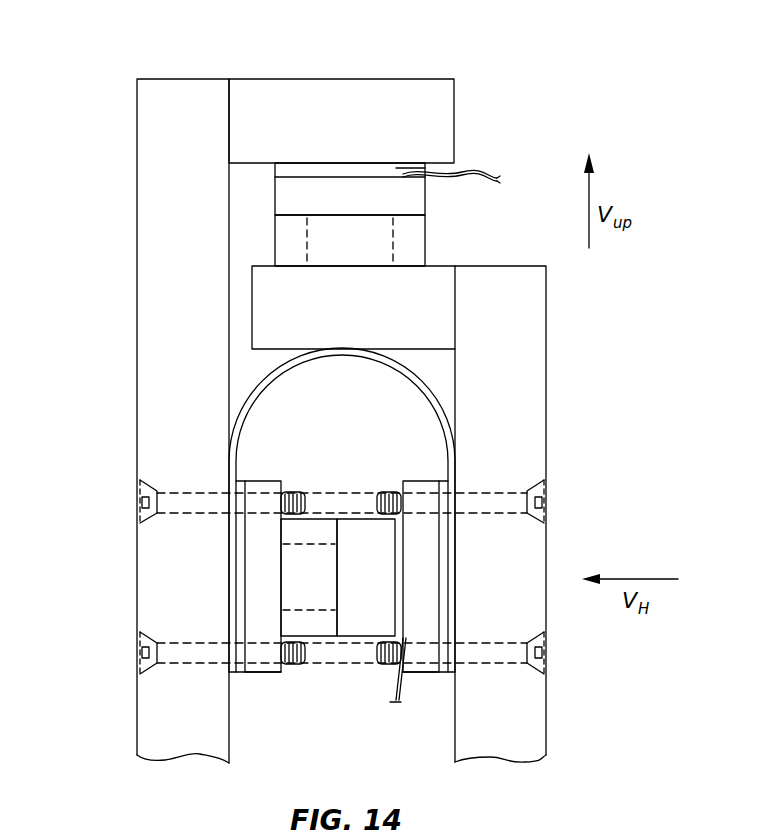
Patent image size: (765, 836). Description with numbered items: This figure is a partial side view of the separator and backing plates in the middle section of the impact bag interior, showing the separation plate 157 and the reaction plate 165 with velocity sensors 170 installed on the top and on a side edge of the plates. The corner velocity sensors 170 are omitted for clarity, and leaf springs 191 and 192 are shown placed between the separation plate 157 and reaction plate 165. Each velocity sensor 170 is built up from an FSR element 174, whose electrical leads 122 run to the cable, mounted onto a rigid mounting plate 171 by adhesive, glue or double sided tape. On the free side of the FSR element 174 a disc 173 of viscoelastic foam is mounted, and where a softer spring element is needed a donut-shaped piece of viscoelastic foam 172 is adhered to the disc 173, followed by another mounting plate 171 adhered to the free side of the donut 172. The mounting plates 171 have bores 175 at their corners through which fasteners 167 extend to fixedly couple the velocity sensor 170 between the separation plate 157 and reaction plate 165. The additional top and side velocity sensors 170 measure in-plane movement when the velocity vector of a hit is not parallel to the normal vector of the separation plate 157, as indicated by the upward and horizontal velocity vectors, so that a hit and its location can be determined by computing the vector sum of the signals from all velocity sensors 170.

The velocity sensor 170 is at (190, 62).
The mounting plate 171 is at (362, 98).
The FSR element 174 is at (396, 168).
The electrical leads 122 is at (468, 172).
The disc 173 is at (410, 194).
The viscoelastic foam donut 172 is at (410, 232).
The leaf spring 191 is at (445, 370).
The leaf spring 192 is at (442, 573).
The bores 175 is at (185, 478).
The fasteners 167 is at (175, 502).
The reaction plate 165 is at (155, 724).
The separation plate 157 is at (510, 714).